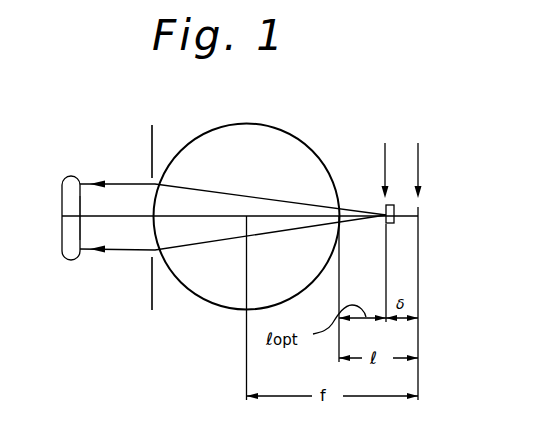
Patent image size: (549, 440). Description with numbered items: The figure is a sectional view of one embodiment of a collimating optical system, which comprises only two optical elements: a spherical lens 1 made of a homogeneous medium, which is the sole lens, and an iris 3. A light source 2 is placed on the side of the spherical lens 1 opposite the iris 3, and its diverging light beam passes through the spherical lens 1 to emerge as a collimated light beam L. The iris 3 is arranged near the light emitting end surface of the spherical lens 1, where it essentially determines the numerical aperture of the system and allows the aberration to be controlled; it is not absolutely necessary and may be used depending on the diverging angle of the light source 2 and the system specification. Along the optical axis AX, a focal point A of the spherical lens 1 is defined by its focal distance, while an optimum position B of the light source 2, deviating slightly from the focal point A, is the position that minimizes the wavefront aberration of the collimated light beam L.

The spherical lens 1 is at (300, 149).
The light source 2 is at (391, 224).
The iris 3 is at (151, 136).
The collimated light beam L is at (69, 176).
The optical axis AX is at (125, 219).
The focal point A is at (417, 174).
The optimum position of the light source B is at (385, 160).